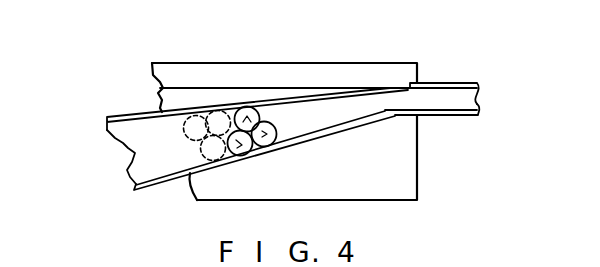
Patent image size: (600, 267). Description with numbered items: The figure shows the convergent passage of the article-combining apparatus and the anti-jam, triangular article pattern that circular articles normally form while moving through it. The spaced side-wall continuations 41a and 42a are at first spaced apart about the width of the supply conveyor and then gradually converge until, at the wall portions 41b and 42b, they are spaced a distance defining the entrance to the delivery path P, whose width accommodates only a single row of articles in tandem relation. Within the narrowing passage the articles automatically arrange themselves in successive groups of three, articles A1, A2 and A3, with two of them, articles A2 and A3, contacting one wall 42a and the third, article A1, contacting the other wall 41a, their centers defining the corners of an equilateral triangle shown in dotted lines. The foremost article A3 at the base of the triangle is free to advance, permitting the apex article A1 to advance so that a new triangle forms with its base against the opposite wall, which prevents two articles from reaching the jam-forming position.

The side-wall continuation 41a is at (146, 113).
The side-wall continuation 42a is at (167, 184).
The wall portion at delivery entrance 41b is at (450, 82).
The wall portion at delivery entrance 42b is at (427, 116).
The article A1 is at (248, 107).
The article A2 is at (242, 156).
The article A3 is at (273, 137).
The delivery path P is at (492, 94).